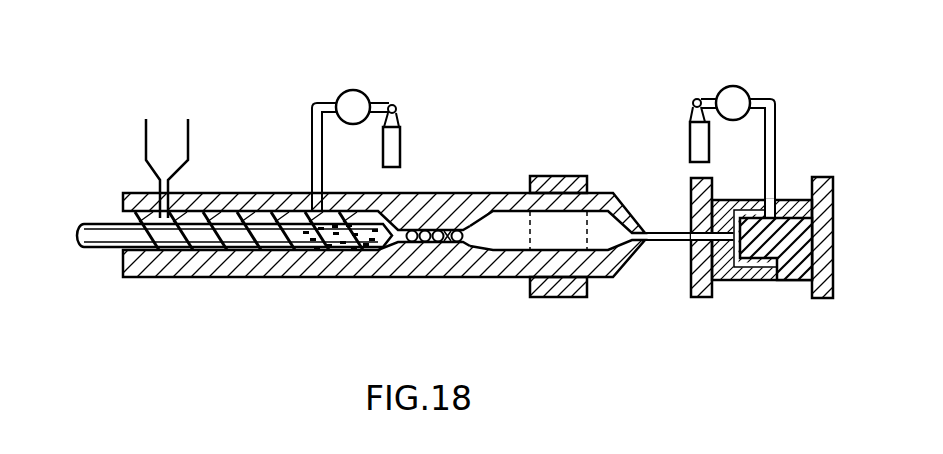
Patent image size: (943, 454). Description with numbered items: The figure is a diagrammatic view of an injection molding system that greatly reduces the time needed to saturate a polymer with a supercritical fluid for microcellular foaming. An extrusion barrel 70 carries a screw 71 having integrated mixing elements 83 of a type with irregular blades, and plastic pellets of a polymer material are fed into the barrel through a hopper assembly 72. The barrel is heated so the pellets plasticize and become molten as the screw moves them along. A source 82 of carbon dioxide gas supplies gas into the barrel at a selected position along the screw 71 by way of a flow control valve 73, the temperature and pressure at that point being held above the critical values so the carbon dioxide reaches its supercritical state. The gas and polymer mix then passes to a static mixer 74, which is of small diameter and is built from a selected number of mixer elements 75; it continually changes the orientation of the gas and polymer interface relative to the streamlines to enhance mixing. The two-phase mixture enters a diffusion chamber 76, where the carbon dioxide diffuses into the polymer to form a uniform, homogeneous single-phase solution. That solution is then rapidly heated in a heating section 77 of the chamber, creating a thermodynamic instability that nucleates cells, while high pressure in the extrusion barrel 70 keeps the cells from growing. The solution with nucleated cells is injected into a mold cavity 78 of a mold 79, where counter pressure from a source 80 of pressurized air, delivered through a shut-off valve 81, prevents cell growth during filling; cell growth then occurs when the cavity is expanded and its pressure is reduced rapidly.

The extrusion barrel 70 is at (288, 266).
The screw 71 is at (208, 254).
The hopper assembly 72 is at (190, 152).
The flow control valve 73 is at (362, 90).
The static mixer 74 is at (419, 212).
The mixer elements 75 is at (403, 246).
The diffusion chamber 76 is at (498, 268).
The heating section 77 is at (547, 298).
The mold cavity 78 is at (735, 280).
The mold 79 is at (756, 292).
The source of air under pressure 80 is at (688, 148).
The shut-off valve 81 is at (728, 88).
The source of CO2 gas 82 is at (401, 148).
The mixing elements 83 is at (349, 250).